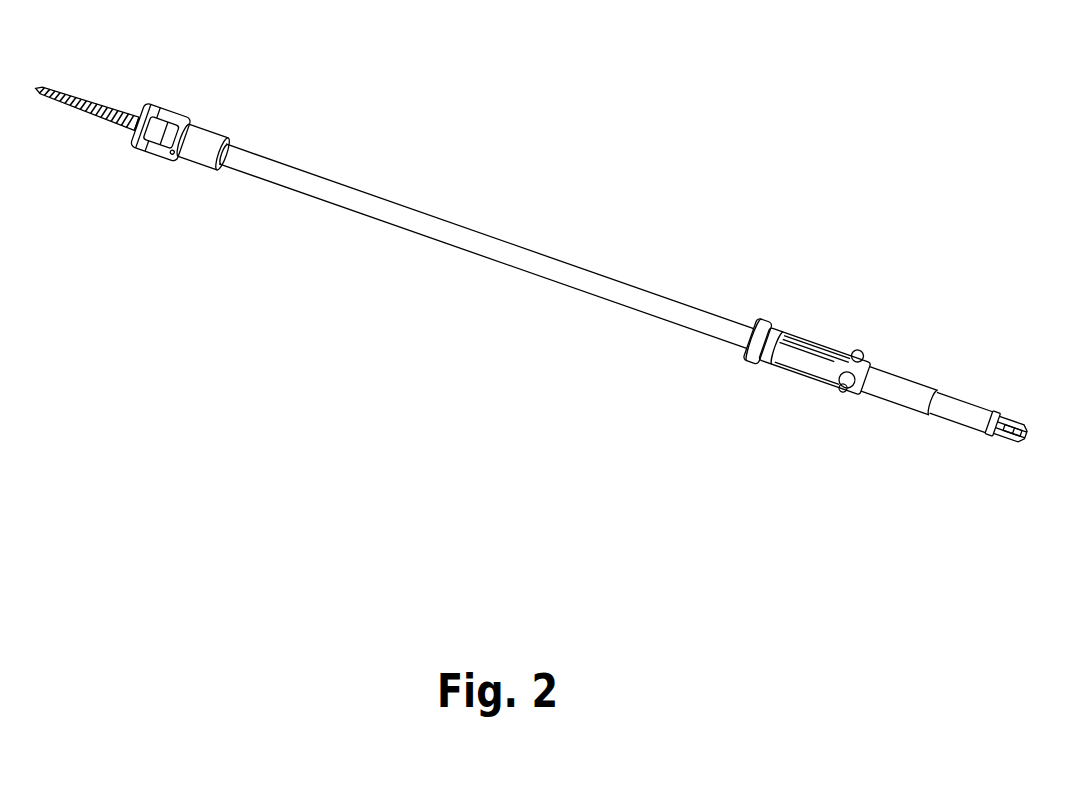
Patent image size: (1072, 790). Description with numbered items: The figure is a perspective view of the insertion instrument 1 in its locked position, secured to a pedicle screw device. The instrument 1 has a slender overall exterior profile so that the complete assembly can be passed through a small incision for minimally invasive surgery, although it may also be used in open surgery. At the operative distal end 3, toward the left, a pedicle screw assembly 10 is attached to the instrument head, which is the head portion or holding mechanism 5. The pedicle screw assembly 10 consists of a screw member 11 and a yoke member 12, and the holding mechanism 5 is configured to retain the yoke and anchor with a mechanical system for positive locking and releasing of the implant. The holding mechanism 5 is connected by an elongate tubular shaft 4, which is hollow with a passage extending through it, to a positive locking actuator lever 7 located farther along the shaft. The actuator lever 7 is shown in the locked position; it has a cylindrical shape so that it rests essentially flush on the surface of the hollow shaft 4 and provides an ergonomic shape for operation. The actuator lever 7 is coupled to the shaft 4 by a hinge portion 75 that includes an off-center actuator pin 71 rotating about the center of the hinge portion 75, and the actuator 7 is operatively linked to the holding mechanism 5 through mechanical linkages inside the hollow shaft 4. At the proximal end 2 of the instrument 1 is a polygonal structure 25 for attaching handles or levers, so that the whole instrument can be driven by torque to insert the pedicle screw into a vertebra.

The insertion instrument 1 is at (556, 168).
The proximal end 2 is at (1006, 346).
The operative distal end 3 is at (263, 78).
The elongate tubular shaft 4 is at (462, 250).
The holding mechanism 5 is at (193, 168).
The actuator lever 7 is at (777, 316).
The pedicle screw assembly 10 is at (119, 149).
The screw member 11 is at (94, 102).
The yoke member 12 is at (160, 113).
The polygonal structure 25 is at (1010, 436).
The off-center actuator pin 71 is at (853, 398).
The hinge portion 75 is at (834, 392).